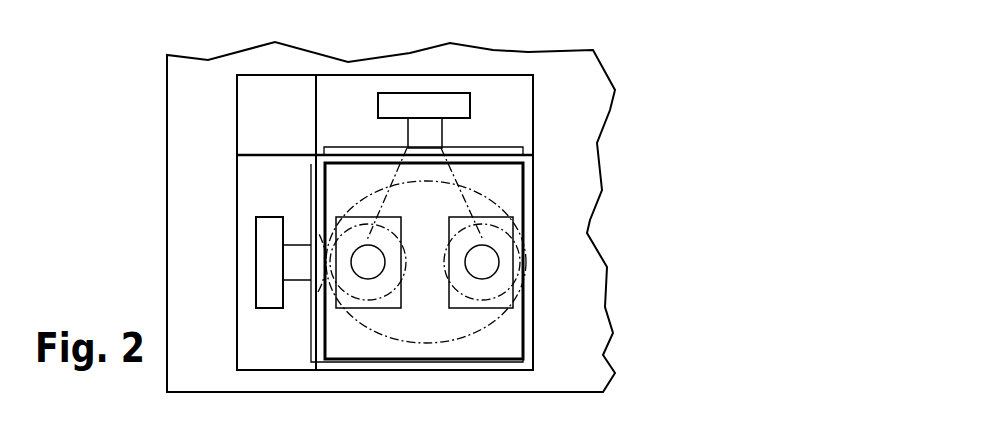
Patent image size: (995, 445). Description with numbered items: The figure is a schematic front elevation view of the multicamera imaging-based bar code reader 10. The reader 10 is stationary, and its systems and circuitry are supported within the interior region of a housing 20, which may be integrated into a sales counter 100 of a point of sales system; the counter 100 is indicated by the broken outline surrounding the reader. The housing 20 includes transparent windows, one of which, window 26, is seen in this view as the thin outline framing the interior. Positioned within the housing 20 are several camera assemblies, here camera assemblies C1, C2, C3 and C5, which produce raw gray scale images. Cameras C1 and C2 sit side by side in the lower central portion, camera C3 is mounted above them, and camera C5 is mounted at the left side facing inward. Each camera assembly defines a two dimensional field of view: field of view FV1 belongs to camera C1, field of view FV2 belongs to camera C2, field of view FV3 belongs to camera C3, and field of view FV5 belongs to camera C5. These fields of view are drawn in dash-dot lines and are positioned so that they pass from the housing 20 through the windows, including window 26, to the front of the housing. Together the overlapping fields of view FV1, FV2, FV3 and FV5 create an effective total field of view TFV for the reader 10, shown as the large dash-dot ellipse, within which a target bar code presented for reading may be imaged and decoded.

The bar code reader 10 is at (526, 60).
The housing 20 is at (545, 164).
The transparent window 26 is at (310, 190).
The sales counter 100 is at (607, 308).
The camera assembly C1 is at (382, 308).
The camera assembly C2 is at (487, 308).
The camera assembly C3 is at (445, 93).
The camera assembly C5 is at (256, 250).
The field of view FV1 is at (363, 300).
The field of view FV2 is at (457, 308).
The field of view FV3 is at (456, 166).
The field of view FV5 is at (320, 284).
The total field of view TFV is at (470, 189).